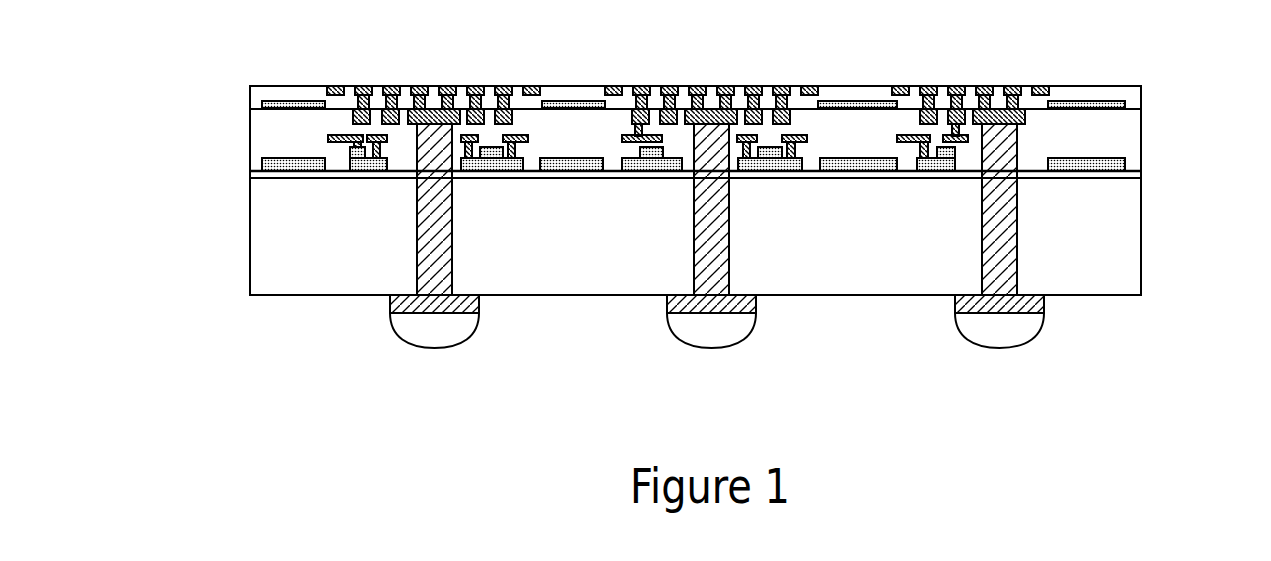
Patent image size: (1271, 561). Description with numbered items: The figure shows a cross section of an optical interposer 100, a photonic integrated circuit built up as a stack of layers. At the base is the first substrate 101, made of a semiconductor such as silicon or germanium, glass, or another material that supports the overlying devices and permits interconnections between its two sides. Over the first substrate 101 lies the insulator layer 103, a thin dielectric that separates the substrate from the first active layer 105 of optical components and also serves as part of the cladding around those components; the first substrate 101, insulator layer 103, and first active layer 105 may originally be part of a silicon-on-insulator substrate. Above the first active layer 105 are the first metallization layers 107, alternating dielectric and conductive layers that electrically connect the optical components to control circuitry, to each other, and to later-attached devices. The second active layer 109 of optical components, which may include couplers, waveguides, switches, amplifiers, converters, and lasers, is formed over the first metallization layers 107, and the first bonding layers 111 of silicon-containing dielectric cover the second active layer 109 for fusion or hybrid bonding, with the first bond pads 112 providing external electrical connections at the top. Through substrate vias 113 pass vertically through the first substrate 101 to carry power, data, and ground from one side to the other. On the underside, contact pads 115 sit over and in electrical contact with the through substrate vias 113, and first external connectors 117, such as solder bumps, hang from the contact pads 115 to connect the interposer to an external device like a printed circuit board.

The optical interposer 100 is at (150, 86).
The first substrate 101 is at (1122, 242).
The insulator layer 103 is at (1123, 175).
The first active layer 105 is at (267, 164).
The first metallization layers 107 is at (1123, 137).
The second active layer 109 is at (267, 105).
The first bonding layers 111 is at (1123, 93).
The first bond pads 112 is at (475, 85).
The through substrate vias 113 is at (715, 257).
The contact pads 115 is at (750, 303).
The first external connectors 117 is at (452, 333).